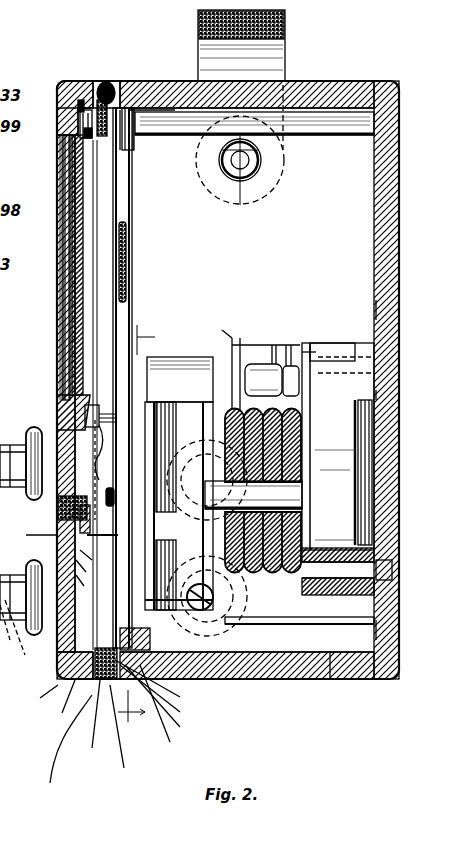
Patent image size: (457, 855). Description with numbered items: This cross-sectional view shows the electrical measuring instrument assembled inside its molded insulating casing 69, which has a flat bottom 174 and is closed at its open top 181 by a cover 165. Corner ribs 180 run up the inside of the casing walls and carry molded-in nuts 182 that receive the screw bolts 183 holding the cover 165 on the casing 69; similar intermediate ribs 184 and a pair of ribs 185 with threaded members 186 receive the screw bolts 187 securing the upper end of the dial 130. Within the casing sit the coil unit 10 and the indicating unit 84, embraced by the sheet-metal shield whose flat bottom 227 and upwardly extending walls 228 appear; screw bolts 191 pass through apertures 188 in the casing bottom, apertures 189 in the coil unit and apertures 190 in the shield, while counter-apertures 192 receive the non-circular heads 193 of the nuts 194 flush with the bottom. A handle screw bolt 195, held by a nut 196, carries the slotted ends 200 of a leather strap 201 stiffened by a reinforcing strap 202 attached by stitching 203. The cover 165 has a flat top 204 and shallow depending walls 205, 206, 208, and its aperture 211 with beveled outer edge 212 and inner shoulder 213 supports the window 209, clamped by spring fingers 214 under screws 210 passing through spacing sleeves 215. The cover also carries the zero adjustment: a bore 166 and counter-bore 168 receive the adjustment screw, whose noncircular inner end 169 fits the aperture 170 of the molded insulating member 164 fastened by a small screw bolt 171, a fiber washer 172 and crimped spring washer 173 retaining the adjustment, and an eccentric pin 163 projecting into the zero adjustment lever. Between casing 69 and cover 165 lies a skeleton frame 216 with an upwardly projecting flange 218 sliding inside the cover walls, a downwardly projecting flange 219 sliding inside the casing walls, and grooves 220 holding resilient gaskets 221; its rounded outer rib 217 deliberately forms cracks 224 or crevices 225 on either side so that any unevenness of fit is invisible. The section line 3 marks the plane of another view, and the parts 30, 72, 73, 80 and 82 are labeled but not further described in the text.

The casing 69 is at (390, 220).
The flat bottom 174 is at (395, 311).
The apertures 188 is at (385, 598).
The flat bottom 227 is at (399, 628).
The ribs 180 is at (345, 668).
The depending wall 205 is at (74, 86).
The resilient gaskets 221 is at (96, 690).
The ribs 185 is at (160, 112).
The ribs and nuts 184 is at (225, 122).
The screw bolts 187 is at (118, 140).
The threaded members 186 is at (168, 145).
The spring fingers 214 is at (75, 400).
The beveled outer edge 212 is at (72, 132).
The inner shoulder 213 is at (78, 150).
The aperture 211 is at (65, 192).
The window 209 is at (72, 225).
The depending wall 208 is at (88, 248).
The dial 130 is at (133, 220).
The section line 3 is at (144, 531).
The stitching 203 is at (198, 36).
The reinforcing strap 202 is at (285, 43).
The leather strap 201 is at (285, 65).
The slotted and apertured ends 200 is at (284, 144).
The screw bolt 195 is at (243, 163).
The nut 196 is at (246, 181).
The indicating unit 84 is at (186, 372).
The downwardly projecting flange 219 is at (200, 640).
The grooves 220 is at (128, 628).
The screw bolts 191 is at (335, 360).
The bellows 82 is at (247, 345).
The valve 80 is at (288, 345).
The lever 30 is at (225, 335).
The coil unit 10 is at (312, 380).
The upwardly extending walls 228 is at (360, 462).
The counter-apertures 192 is at (392, 560).
The non-circular head 193 is at (393, 571).
The nut 194 is at (393, 580).
The apertures 189 is at (300, 597).
The apertures 190 is at (352, 600).
The flat top 204 is at (60, 428).
The securing screws 210 is at (80, 408).
The spacing sleeves 215 is at (100, 432).
The noncircular inner end 169 is at (114, 489).
The molded insulating member 164 is at (92, 512).
The aperture 170 is at (90, 522).
The screw bolt 171 is at (92, 534).
The pin 163 is at (92, 560).
The crimped spring washer 173 is at (86, 572).
The fiber washer 172 is at (84, 586).
The counter-bore 168 is at (57, 548).
The cover 165 is at (57, 496).
The bore 166 is at (28, 535).
The line 73 is at (36, 640).
The line 72 is at (15, 655).
The upwardly projecting flange 218 is at (31, 699).
The depending wall 206 is at (55, 704).
The skeleton frame 216 is at (87, 722).
The crevices 225 is at (61, 748).
The rib 217 is at (130, 734).
The nuts 182 is at (163, 681).
The screw bolts 183 is at (165, 691).
The open top 181 is at (168, 699).
The cracks 224 is at (169, 709).